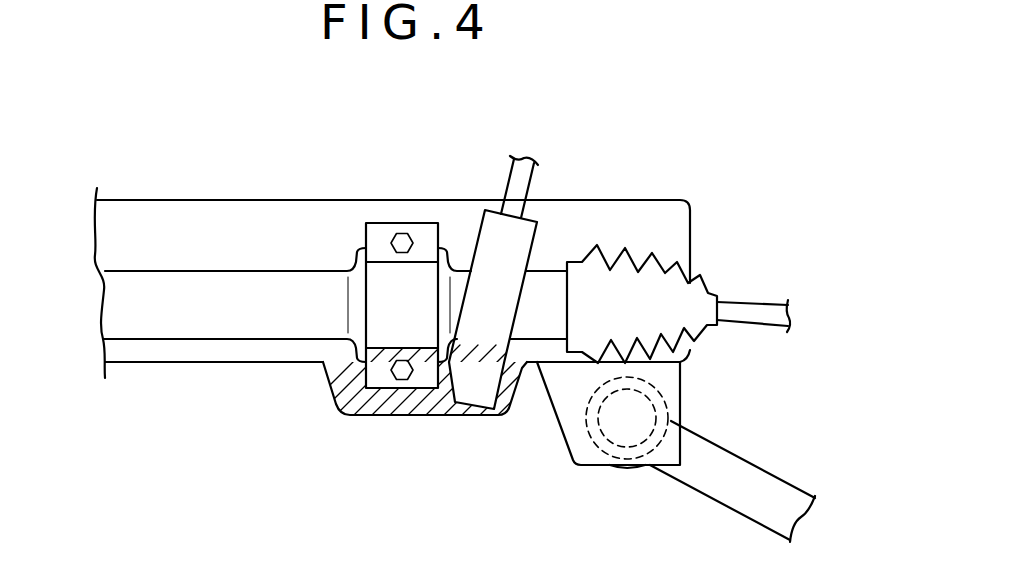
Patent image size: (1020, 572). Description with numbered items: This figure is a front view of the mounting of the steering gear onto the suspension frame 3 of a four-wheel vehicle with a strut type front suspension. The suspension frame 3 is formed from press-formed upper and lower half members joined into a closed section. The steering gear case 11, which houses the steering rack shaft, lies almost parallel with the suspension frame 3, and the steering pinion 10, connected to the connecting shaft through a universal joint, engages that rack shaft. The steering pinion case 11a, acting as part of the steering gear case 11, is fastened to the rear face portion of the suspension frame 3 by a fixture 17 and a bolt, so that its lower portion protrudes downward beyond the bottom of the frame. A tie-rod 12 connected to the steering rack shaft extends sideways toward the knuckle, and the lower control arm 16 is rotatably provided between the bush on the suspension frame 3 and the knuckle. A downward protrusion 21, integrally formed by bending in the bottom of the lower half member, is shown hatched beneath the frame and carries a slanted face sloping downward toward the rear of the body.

The suspension frame 3 is at (290, 213).
The steering pinion 10 is at (528, 182).
The steering gear case 11 is at (223, 312).
The steering pinion case 11a is at (487, 243).
The tie-rod 12 is at (752, 310).
The lower control arm 16 is at (716, 488).
The fixture 17 is at (378, 272).
The downward protrusion 21 is at (371, 408).